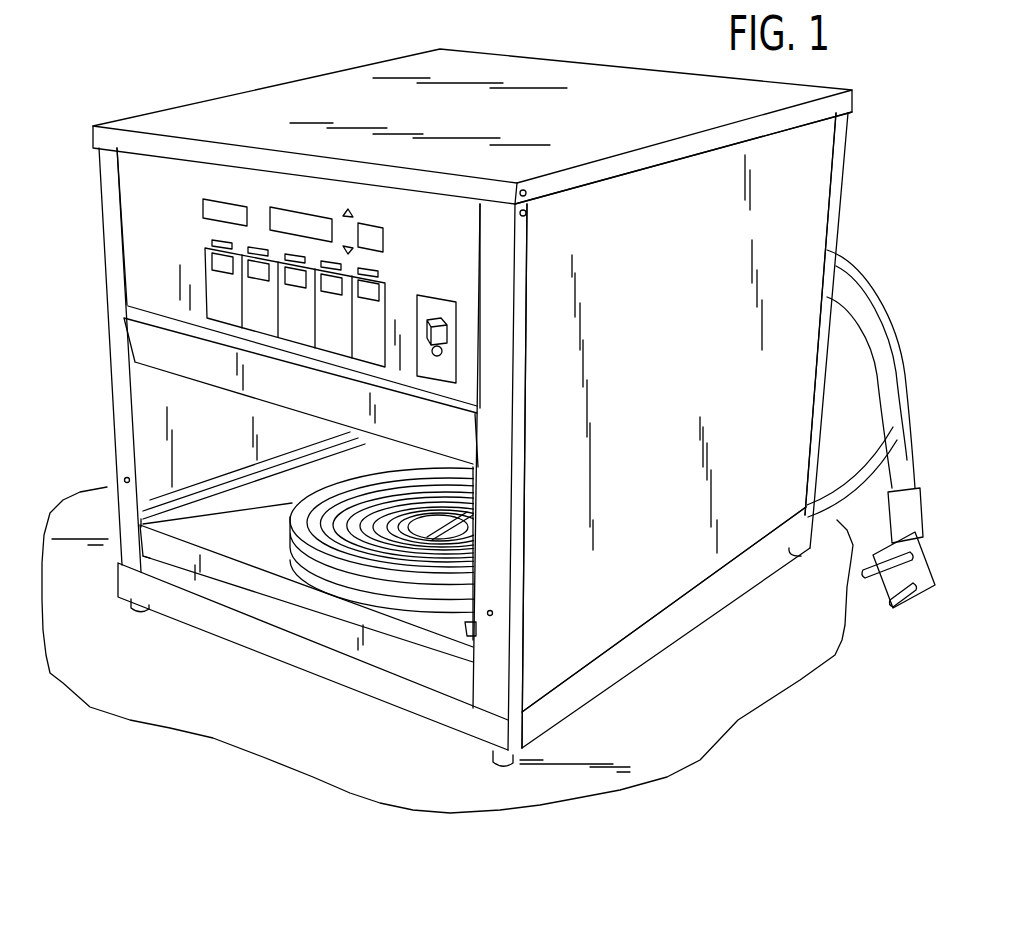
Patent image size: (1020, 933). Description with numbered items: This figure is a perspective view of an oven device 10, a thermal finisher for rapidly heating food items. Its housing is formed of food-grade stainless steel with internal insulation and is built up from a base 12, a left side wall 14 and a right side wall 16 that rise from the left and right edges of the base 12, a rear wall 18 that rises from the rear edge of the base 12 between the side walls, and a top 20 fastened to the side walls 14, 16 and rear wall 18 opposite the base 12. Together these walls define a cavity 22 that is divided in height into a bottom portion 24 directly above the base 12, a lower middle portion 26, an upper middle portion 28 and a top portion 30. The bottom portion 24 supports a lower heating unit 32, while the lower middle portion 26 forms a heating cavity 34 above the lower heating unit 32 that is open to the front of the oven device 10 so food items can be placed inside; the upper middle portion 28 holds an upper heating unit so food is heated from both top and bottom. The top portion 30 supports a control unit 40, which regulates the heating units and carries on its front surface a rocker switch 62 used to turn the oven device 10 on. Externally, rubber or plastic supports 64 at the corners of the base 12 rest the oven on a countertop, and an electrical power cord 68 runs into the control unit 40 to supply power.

The oven device 10 is at (176, 60).
The base 12 is at (668, 642).
The left side wall 14 is at (100, 198).
The right side wall 16 is at (806, 182).
The rear wall 18 is at (844, 147).
The top 20 is at (628, 80).
The cavity 22 is at (262, 537).
The bottom portion 24 is at (190, 522).
The lower middle portion 26 is at (162, 447).
The upper middle portion 28 is at (148, 373).
The top portion 30 is at (147, 275).
The lower heating unit 32 is at (310, 484).
The heating cavity 34 is at (294, 432).
The control unit 40 is at (462, 331).
The rocker switch 62 is at (425, 325).
The supports 64 is at (137, 612).
The electrical power cord 68 is at (855, 302).